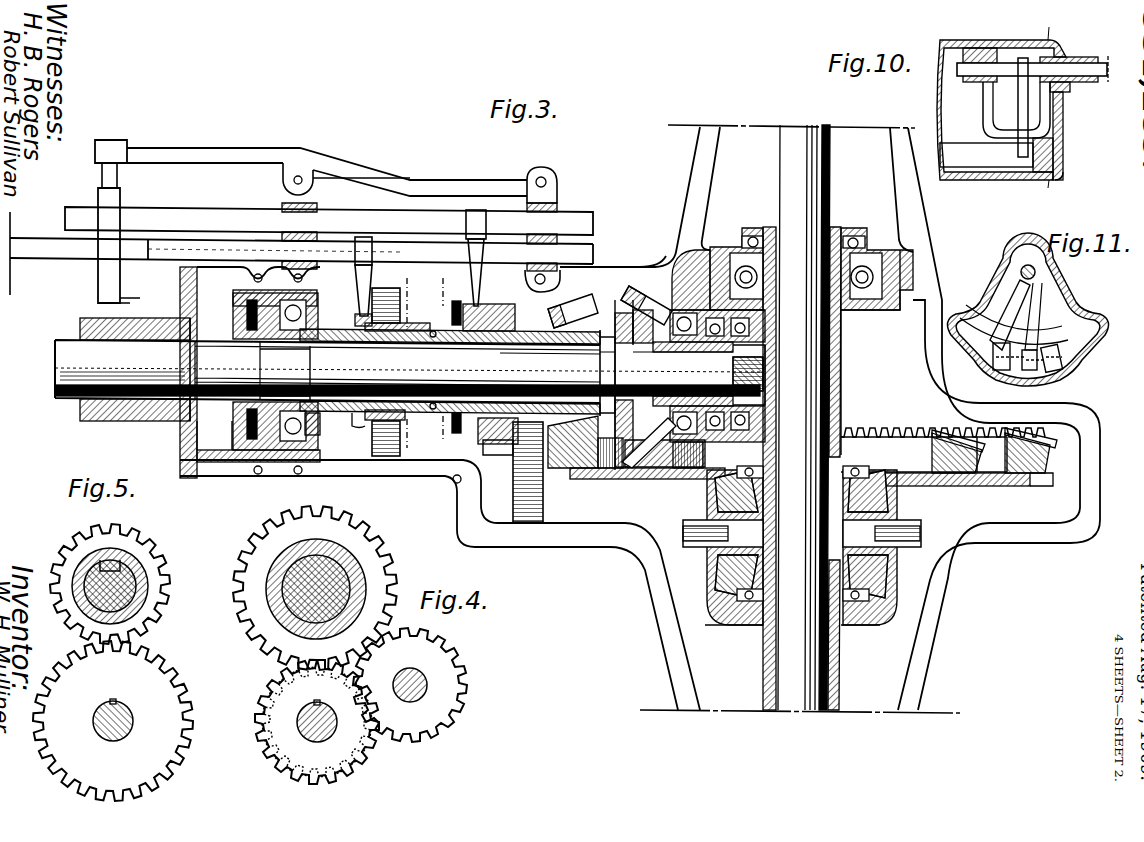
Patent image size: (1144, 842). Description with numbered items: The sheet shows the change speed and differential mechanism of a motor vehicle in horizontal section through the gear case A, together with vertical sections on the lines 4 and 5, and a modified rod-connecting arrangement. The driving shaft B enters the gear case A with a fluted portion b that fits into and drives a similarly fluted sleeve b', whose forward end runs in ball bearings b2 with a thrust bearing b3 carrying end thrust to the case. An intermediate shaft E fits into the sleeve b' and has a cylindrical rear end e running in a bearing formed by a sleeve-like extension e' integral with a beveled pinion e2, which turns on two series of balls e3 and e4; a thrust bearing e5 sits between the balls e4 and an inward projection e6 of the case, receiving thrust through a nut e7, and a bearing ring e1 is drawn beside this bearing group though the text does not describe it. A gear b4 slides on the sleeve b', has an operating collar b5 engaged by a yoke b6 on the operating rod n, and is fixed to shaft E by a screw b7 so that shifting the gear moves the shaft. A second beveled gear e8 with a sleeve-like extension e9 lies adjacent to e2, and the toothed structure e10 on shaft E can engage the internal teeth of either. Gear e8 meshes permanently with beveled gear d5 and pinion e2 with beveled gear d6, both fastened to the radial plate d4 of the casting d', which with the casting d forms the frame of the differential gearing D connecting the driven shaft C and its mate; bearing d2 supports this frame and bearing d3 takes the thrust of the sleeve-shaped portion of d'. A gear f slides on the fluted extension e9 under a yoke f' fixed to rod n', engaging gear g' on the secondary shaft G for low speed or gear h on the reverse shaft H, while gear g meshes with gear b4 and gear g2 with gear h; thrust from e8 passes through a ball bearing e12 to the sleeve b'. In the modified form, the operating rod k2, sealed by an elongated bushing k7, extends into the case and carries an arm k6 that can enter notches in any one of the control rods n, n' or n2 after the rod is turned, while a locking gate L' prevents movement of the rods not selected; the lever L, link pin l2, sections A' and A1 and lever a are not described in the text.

In FIG. 3, the gear case A is at (640, 419).
In FIG. 10, the casing section A' is at (1014, 107).
In FIG. 11, the casing bracket A1 is at (1005, 268).
In FIG. 3, the shifting lever a is at (327, 210).
In FIG. 3, the driving shaft B is at (407, 369).
In FIG. 3, the fluted portion of driving shaft b is at (397, 370).
In FIG. 3, the fluted sleeve b' is at (285, 373).
In FIG. 5, the fluted sleeve b' is at (137, 582).
In FIG. 3, the ball bearings b2 is at (275, 380).
In FIG. 3, the thrust bearing b3 is at (232, 430).
In FIG. 3, the gear b4 is at (362, 440).
In FIG. 5, the gear b4 is at (140, 545).
In FIG. 3, the operating collar b5 is at (355, 317).
In FIG. 3, the yoke b6 is at (357, 282).
In FIG. 3, the screw b7 is at (355, 412).
In FIG. 3, the live or driven shaft C is at (809, 418).
In FIG. 3, the differential gearing D is at (888, 570).
In FIG. 3, the differential casting d is at (792, 627).
In FIG. 3, the differential casting d' is at (857, 382).
In FIG. 3, the ball bearing d2 is at (870, 302).
In FIG. 3, the thrust bearing d3 is at (860, 246).
In FIG. 3, the radial plate or disk d4 is at (975, 480).
In FIG. 3, the beveled gear d5 is at (580, 470).
In FIG. 3, the beveled gear d6 is at (660, 475).
In FIG. 3, the intermediate shaft E is at (450, 372).
In FIG. 5, the intermediate shaft E is at (160, 585).
In FIG. 4, the intermediate shaft E is at (280, 612).
In FIG. 3, the cylindrical rear end e is at (683, 374).
In FIG. 3, the sleeve-like extension e' is at (637, 385).
In FIG. 3, the bearing ring e1 is at (757, 357).
In FIG. 3, the beveled pinion e2 is at (638, 310).
In FIG. 3, the series of balls e3 is at (668, 285).
In FIG. 3, the series of balls e4 is at (757, 318).
In FIG. 3, the thrust bearing e5 is at (722, 346).
In FIG. 3, the inwardly projecting portion of gear case e6 is at (700, 345).
In FIG. 3, the nut e7 is at (757, 337).
In FIG. 3, the second beveled gear e8 is at (575, 318).
In FIG. 3, the sleeve-like extension e9 is at (550, 354).
In FIG. 4, the sleeve-like extension e9 is at (358, 596).
In FIG. 3, the toothed structure e10 is at (598, 360).
In FIG. 3, the ball bearing e12 is at (432, 340).
In FIG. 3, the gear f is at (497, 460).
In FIG. 4, the gear f is at (316, 588).
In FIG. 3, the yoke f' is at (483, 258).
In FIG. 5, the secondary shaft G is at (128, 722).
In FIG. 3, the gear g is at (396, 369).
In FIG. 5, the gear g is at (188, 762).
In FIG. 4, the gear g is at (317, 730).
In FIG. 3, the gear g' is at (452, 361).
In FIG. 4, the gear g' is at (302, 722).
In FIG. 3, the gear g2 is at (501, 372).
In FIG. 4, the reverse shaft H is at (430, 685).
In FIG. 3, the gear h is at (536, 472).
In FIG. 4, the gear h is at (455, 718).
In FIG. 3, the operating rod k2 is at (38, 255).
In FIG. 10, the operating rod k2 is at (1080, 82).
In FIG. 11, the operating rod k2 is at (1036, 273).
In FIG. 10, the arm k6 is at (1018, 121).
In FIG. 11, the arm k6 is at (1016, 325).
In FIG. 10, the sleeve or bushing k7 is at (1076, 60).
In FIG. 3, the lever link L is at (136, 233).
In FIG. 10, the locking gate L' is at (1034, 110).
In FIG. 11, the locking gate L' is at (1012, 312).
In FIG. 3, the link pin l2 is at (120, 298).
In FIG. 3, the operating rod n is at (329, 236).
In FIG. 11, the operating rod n is at (1004, 379).
In FIG. 3, the operating rod n' is at (277, 232).
In FIG. 11, the operating rod n' is at (1033, 380).
In FIG. 11, the control rod n2 is at (1063, 377).
In FIG. 3, the section line 4 is at (442, 354).
In FIG. 3, the section line 5 is at (407, 362).